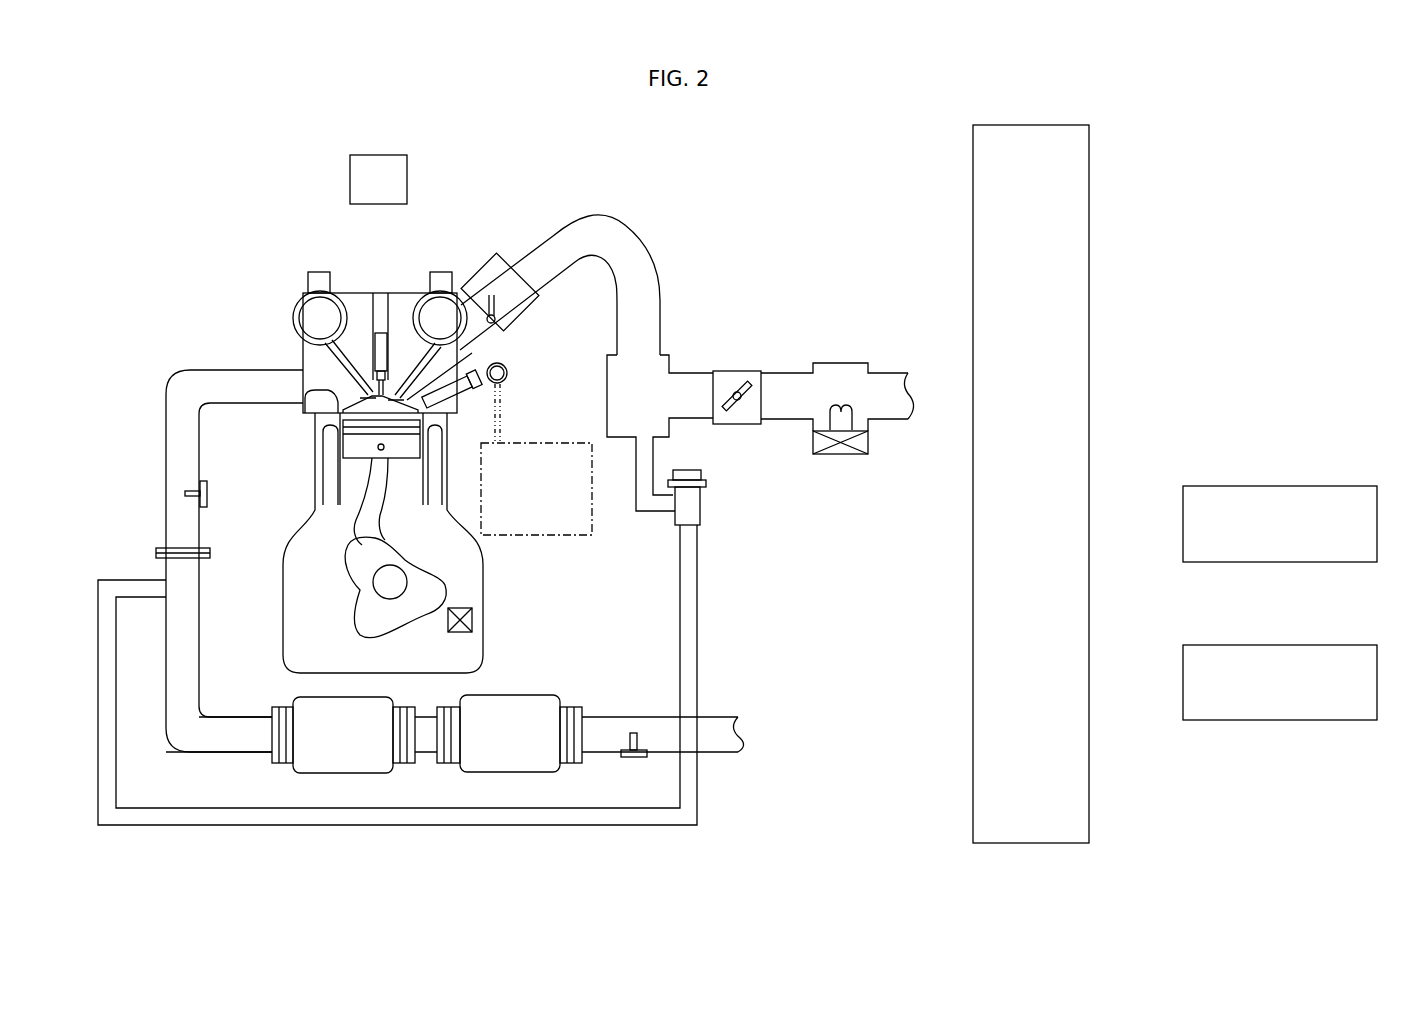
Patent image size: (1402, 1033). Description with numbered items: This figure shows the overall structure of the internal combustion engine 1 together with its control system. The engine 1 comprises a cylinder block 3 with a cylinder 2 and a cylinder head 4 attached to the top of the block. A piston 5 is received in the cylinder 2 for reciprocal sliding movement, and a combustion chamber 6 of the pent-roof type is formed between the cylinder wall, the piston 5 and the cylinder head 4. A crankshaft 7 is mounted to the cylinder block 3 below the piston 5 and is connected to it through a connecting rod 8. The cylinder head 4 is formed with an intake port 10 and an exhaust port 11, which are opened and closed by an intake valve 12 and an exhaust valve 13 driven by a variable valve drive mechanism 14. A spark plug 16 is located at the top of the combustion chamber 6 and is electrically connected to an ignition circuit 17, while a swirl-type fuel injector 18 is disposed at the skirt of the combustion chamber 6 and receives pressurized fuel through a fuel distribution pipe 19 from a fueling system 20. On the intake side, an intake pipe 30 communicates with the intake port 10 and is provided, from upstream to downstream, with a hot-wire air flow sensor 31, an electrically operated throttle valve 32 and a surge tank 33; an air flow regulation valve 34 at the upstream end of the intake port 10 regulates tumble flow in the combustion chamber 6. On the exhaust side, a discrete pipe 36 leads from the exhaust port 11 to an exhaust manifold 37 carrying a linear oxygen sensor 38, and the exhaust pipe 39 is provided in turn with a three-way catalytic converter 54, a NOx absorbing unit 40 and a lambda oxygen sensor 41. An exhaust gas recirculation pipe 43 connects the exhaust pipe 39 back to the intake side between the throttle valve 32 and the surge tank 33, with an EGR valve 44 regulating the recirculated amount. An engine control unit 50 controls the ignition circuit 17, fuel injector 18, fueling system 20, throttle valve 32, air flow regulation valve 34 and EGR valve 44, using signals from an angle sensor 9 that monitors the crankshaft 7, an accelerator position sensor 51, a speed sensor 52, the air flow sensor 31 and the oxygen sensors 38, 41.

The internal combustion engine 1 is at (270, 230).
The cylinder 2 is at (415, 452).
The cylinder block 3 is at (292, 520).
The cylinder head 4 is at (350, 293).
The piston 5 is at (350, 446).
The combustion chamber 6 is at (345, 420).
The crankshaft 7 is at (375, 590).
The connecting rod 8 is at (312, 551).
The angle sensor 9 is at (973, 623).
The intake port 10 is at (480, 352).
The exhaust port 11 is at (322, 390).
The intake valve 12 is at (381, 204).
The exhaust valve 13 is at (305, 355).
The variable valve drive mechanism 14 is at (300, 303).
The spark plug 16 is at (377, 355).
The ignition circuit 17 is at (973, 178).
The fuel injector 18 is at (973, 295).
The fuel distribution pipe 19 is at (505, 382).
The fueling system 20 is at (973, 588).
The intake pipe 30 is at (625, 222).
The air flow sensor 31 is at (973, 442).
The electrically operated throttle valve 32 is at (973, 327).
The surge tank 33 is at (608, 388).
The air flow regulation valve 34 is at (973, 204).
The discrete intake pipe 36 is at (168, 372).
The exhaust manifold 37 is at (166, 500).
The linear oxygen sensor 38 is at (973, 793).
The exhaust pipe 39 is at (167, 697).
The NOx absorbing unit 40 is at (540, 695).
The lambda oxygen sensor 41 is at (973, 782).
The exhaust gas recirculation pipe 43 is at (175, 807).
The exhaust gas recirculation valve 44 is at (973, 475).
The engine control unit 50 is at (1089, 158).
The accelerator position sensor 51 is at (1089, 521).
The speed sensor 52 is at (1089, 681).
The three-way catalytic converter 54 is at (290, 697).